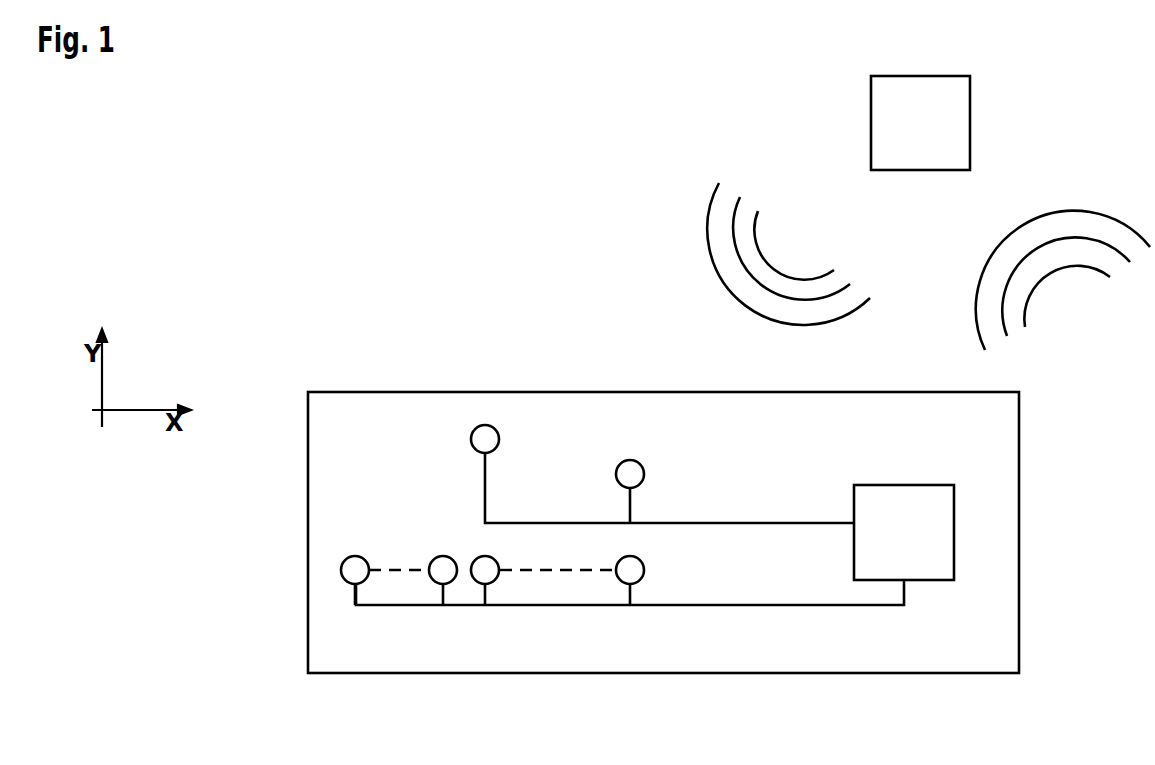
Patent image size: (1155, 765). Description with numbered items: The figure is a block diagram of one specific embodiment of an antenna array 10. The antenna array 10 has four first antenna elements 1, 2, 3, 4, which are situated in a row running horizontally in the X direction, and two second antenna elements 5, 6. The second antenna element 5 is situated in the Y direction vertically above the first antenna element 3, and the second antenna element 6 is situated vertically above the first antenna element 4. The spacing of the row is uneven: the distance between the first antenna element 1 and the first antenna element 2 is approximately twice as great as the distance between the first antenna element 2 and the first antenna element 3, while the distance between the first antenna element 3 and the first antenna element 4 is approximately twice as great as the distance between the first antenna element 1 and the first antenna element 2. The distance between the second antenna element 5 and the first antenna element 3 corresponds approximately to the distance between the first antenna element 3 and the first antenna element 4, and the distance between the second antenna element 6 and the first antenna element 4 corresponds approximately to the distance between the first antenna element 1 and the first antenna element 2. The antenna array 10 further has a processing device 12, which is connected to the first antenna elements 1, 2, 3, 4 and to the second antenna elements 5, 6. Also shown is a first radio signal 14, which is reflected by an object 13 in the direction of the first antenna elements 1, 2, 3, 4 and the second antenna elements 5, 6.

The first antenna element 1 is at (364, 583).
The first antenna element 2 is at (452, 583).
The first antenna element 3 is at (494, 583).
The first antenna element 4 is at (644, 569).
The second antenna element 5 is at (471, 438).
The second antenna element 6 is at (644, 472).
The antenna array 10 is at (1019, 472).
The processing device 12 is at (954, 532).
The object 13 is at (970, 119).
The first radio signal 14 is at (710, 253).